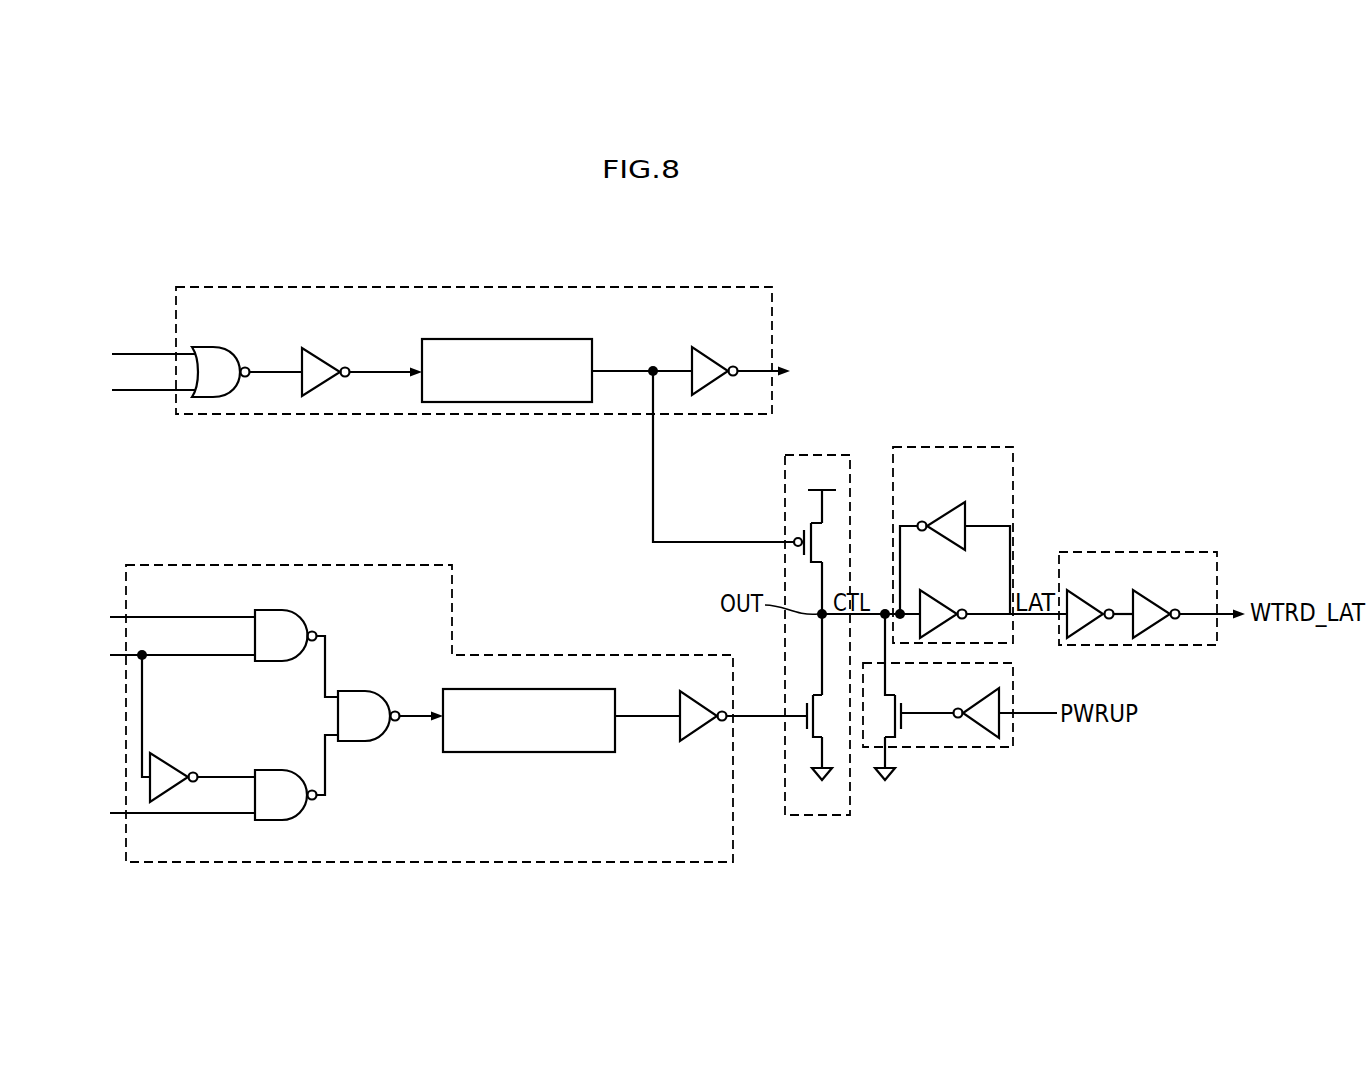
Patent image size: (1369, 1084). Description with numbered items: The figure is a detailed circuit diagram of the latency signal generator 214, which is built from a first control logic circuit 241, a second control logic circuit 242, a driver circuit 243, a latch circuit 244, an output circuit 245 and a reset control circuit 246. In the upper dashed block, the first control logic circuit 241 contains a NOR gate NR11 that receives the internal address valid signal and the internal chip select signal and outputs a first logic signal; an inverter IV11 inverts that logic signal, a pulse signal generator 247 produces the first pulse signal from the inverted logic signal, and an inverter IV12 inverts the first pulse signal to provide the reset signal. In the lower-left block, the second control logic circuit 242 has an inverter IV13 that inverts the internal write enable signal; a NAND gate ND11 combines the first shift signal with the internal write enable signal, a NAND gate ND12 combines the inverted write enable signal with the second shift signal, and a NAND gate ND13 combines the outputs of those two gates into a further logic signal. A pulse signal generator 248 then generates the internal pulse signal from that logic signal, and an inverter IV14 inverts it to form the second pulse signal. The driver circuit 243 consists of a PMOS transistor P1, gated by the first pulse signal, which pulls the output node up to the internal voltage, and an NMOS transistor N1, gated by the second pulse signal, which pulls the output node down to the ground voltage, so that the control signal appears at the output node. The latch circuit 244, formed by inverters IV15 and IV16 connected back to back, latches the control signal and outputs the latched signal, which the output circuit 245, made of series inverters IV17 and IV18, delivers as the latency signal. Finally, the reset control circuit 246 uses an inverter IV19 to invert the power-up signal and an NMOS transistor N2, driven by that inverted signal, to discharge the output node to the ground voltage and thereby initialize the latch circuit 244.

The latency signal generator 214 is at (1148, 318).
The first control logic circuit 241 is at (490, 287).
The second control logic circuit 242 is at (345, 565).
The driver circuit 243 is at (835, 455).
The latch circuit 244 is at (955, 447).
The output circuit 245 is at (1130, 552).
The reset control circuit 246 is at (1013, 677).
The pulse signal generator 247 is at (460, 339).
The pulse signal generator 248 is at (525, 689).
The NOR gate NR11 is at (205, 347).
The inverter IV11 is at (312, 348).
The inverter IV12 is at (700, 348).
The inverter IV13 is at (160, 753).
The inverter IV14 is at (688, 741).
The inverter IV15 is at (938, 592).
The inverter IV16 is at (945, 502).
The inverter IV17 is at (1078, 590).
The inverter IV18 is at (1150, 590).
The inverter IV19 is at (980, 700).
The NAND gate ND11 is at (270, 610).
The NAND gate ND12 is at (270, 820).
The NAND gate ND13 is at (352, 691).
The PMOS transistor P1 is at (821, 542).
The NMOS transistor N1 is at (827, 716).
The NMOS transistor N2 is at (910, 716).